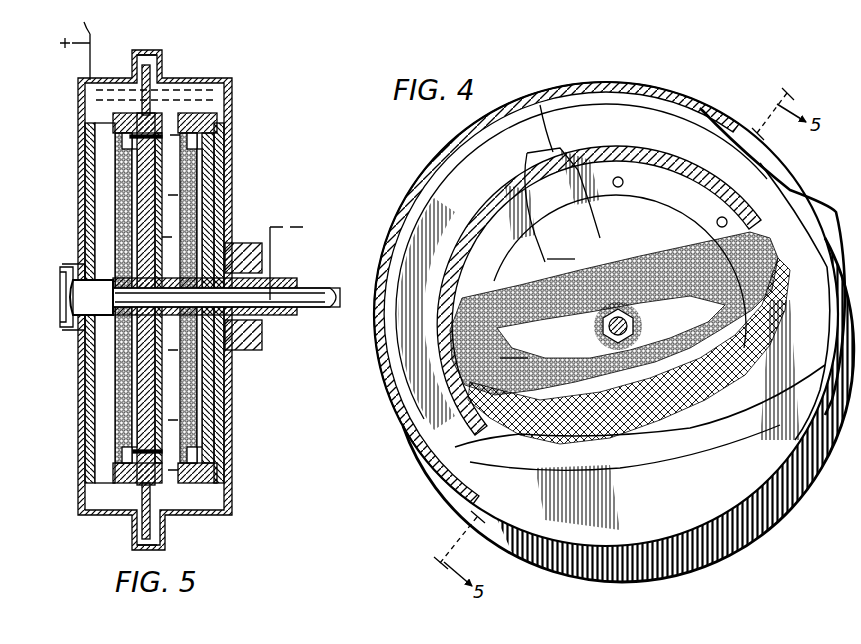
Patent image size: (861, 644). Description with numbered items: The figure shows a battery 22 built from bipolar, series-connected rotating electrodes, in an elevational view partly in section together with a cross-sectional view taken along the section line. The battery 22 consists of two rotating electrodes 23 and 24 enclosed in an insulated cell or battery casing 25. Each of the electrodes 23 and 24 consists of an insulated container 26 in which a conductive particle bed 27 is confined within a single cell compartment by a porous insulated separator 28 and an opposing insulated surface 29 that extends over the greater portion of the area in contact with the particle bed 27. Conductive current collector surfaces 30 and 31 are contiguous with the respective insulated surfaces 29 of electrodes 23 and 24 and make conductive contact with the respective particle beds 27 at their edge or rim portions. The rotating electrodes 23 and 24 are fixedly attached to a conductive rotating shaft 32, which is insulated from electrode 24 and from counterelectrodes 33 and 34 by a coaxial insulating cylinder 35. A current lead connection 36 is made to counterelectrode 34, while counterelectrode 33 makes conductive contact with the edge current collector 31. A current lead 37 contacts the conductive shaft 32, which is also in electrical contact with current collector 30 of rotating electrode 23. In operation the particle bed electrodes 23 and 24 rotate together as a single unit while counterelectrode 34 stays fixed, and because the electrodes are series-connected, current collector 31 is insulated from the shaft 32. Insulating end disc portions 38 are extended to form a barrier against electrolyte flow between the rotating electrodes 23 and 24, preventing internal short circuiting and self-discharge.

In FIG. 5, the battery 22 is at (208, 73).
In FIG. 4, the battery 22 is at (445, 143).
In FIG. 5, the rotating electrode 23 is at (207, 106).
In FIG. 4, the rotating electrode 23 is at (540, 105).
In FIG. 5, the rotating electrode 24 is at (130, 110).
In FIG. 4, the rotating electrode 24 is at (592, 147).
In FIG. 5, the battery casing 25 is at (233, 120).
In FIG. 4, the battery casing 25 is at (400, 197).
In FIG. 5, the insulated container 26 is at (217, 482).
In FIG. 4, the insulated container 26 is at (412, 442).
In FIG. 5, the conductive particle bed 27 is at (122, 162).
In FIG. 4, the conductive particle bed 27 is at (514, 348).
In FIG. 5, the porous insulated separator 28 is at (180, 192).
In FIG. 4, the porous insulated separator 28 is at (432, 484).
In FIG. 5, the opposing insulated surface 29 is at (120, 390).
In FIG. 4, the opposing insulated surface 29 is at (561, 249).
In FIG. 5, the conductive current collector surface 30 is at (208, 143).
In FIG. 4, the conductive current collector surface 30 is at (683, 193).
In FIG. 5, the conductive current collector surface 31 is at (122, 137).
In FIG. 5, the conductive rotating shaft 32 is at (296, 316).
In FIG. 4, the conductive rotating shaft 32 is at (640, 326).
In FIG. 5, the counterelectrode 33 is at (203, 213).
In FIG. 5, the counterelectrode 34 is at (93, 193).
In FIG. 4, the counterelectrode 34 is at (652, 452).
In FIG. 5, the coaxial insulating cylinder 35 is at (72, 329).
In FIG. 4, the coaxial insulating cylinder 35 is at (612, 340).
In FIG. 5, the current lead connection 36 is at (88, 32).
In FIG. 5, the current lead 37 is at (272, 250).
In FIG. 5, the end disc portions 38 is at (163, 72).